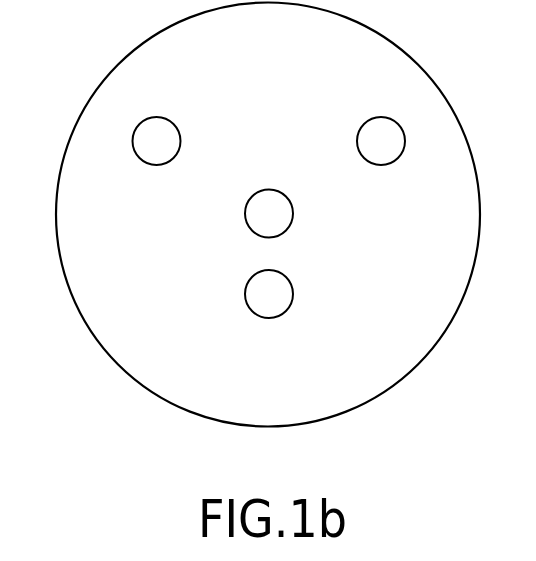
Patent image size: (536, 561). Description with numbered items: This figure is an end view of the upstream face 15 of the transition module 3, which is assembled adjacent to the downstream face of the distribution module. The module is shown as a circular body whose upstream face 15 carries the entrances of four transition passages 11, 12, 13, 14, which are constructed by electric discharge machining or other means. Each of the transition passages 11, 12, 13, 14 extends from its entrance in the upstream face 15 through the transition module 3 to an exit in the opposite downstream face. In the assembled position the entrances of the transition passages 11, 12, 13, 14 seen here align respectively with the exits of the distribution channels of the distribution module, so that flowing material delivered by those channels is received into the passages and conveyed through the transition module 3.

The transition module 3 is at (410, 50).
The transition passage 11 is at (380, 165).
The transition passage 12 is at (180, 138).
The transition passage 13 is at (282, 190).
The transition passage 14 is at (275, 318).
The upstream face 15 is at (284, 44).